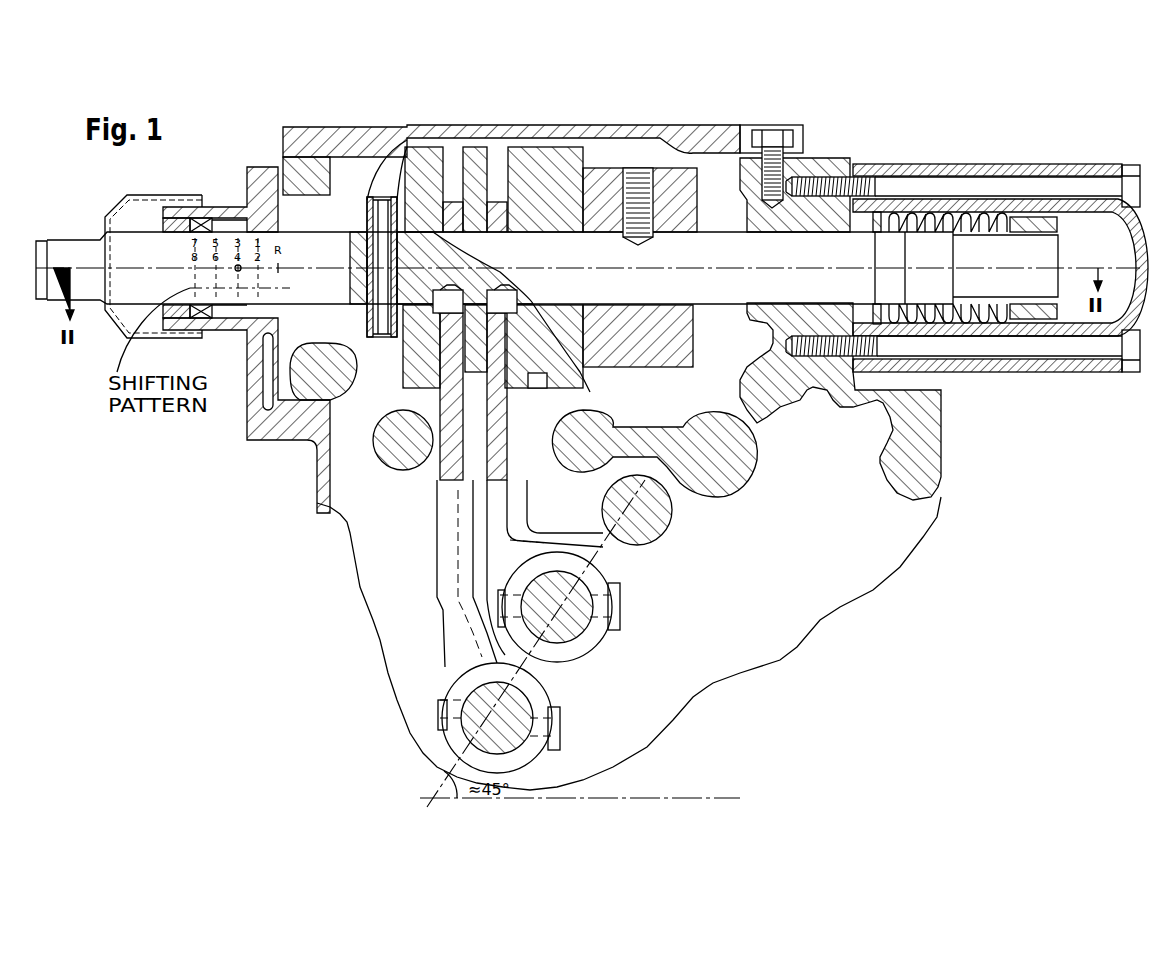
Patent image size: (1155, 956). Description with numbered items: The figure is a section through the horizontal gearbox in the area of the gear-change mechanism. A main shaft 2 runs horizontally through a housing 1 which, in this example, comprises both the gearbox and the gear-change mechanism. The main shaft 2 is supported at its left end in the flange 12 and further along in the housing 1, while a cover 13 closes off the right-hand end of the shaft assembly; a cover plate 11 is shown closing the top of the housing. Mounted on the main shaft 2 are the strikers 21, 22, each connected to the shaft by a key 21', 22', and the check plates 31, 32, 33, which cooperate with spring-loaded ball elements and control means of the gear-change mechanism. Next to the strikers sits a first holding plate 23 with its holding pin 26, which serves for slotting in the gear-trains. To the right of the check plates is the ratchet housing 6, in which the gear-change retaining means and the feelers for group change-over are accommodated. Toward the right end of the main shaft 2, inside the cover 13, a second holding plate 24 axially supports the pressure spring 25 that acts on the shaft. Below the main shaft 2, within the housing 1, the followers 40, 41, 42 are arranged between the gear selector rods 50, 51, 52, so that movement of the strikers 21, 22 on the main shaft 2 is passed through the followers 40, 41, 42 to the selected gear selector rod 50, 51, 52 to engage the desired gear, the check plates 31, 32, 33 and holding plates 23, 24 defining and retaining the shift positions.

The housing 1 is at (287, 170).
The main shaft 2 is at (117, 250).
The ratchet housing 6 is at (676, 177).
The cover plate 11 is at (304, 128).
The flange 12 is at (252, 180).
The cover 13 is at (1086, 164).
The striker 21 is at (450, 286).
The key 21' is at (412, 348).
The striker 22 is at (500, 286).
The key 22' is at (556, 348).
The first holding plate 23 is at (406, 215).
The second holding plate 24 is at (1030, 222).
The pressure spring 25 is at (940, 213).
The holding pin 26 is at (378, 208).
The check plate 31 is at (418, 147).
The check plate 32 is at (475, 147).
The check plate 33 is at (538, 147).
The follower 40 is at (527, 753).
The follower 41 is at (575, 650).
The follower 42 is at (577, 523).
The gear selector rod 50 is at (520, 720).
The gear selector rod 51 is at (577, 627).
The gear selector rod 52 is at (667, 530).